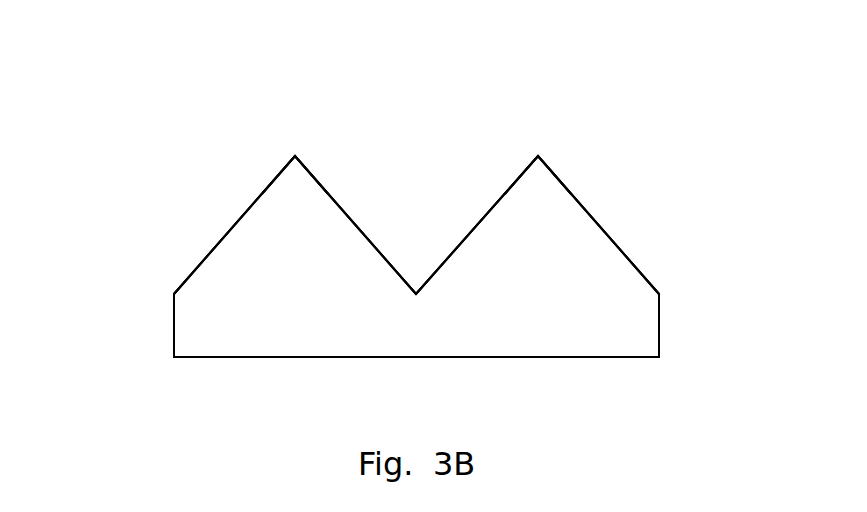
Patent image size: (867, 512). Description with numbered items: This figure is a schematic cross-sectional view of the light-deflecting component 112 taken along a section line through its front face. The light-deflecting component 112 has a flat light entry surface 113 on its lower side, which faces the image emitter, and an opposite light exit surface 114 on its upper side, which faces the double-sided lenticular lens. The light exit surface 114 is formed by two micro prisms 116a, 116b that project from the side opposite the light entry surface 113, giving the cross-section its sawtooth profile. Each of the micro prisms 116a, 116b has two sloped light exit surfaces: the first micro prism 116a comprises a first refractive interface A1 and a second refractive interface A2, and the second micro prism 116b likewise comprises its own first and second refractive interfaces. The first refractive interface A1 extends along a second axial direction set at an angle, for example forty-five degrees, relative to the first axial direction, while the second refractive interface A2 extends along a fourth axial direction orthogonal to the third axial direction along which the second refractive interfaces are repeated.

The light-deflecting component 112 is at (101, 65).
The light entry surface 113 is at (612, 361).
The light exit surface 114 is at (582, 196).
The micro prism 116a is at (290, 197).
The micro prism 116b is at (543, 198).
The first refractive interface A1 is at (221, 236).
The second refractive interface A2 is at (332, 191).